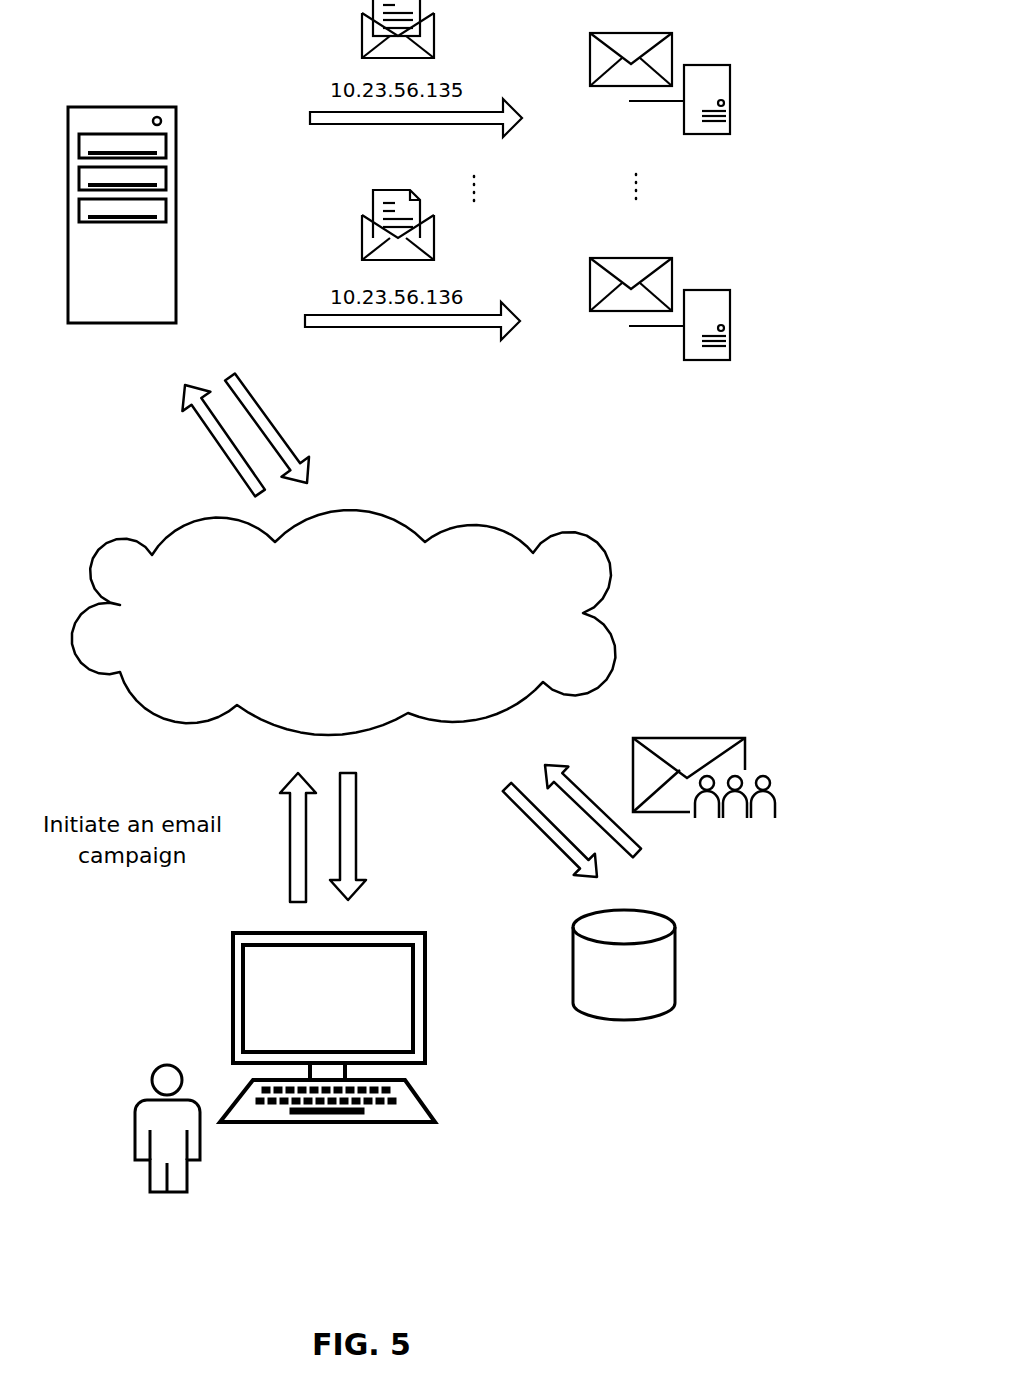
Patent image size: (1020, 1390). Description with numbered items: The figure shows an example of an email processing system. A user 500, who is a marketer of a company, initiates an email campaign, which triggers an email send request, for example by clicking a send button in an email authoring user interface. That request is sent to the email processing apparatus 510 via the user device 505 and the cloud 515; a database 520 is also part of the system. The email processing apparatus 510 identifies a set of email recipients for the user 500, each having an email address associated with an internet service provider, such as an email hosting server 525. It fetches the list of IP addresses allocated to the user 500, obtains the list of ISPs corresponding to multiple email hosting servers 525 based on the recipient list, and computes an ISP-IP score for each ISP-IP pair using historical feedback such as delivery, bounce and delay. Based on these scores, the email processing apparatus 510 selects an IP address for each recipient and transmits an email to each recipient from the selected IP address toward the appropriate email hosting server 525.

The user 500 is at (163, 1193).
The user device 505 is at (343, 1124).
The email processing apparatus 510 is at (176, 207).
The cloud 515 is at (618, 647).
The database 520 is at (675, 963).
The email hosting server 525 is at (730, 108).